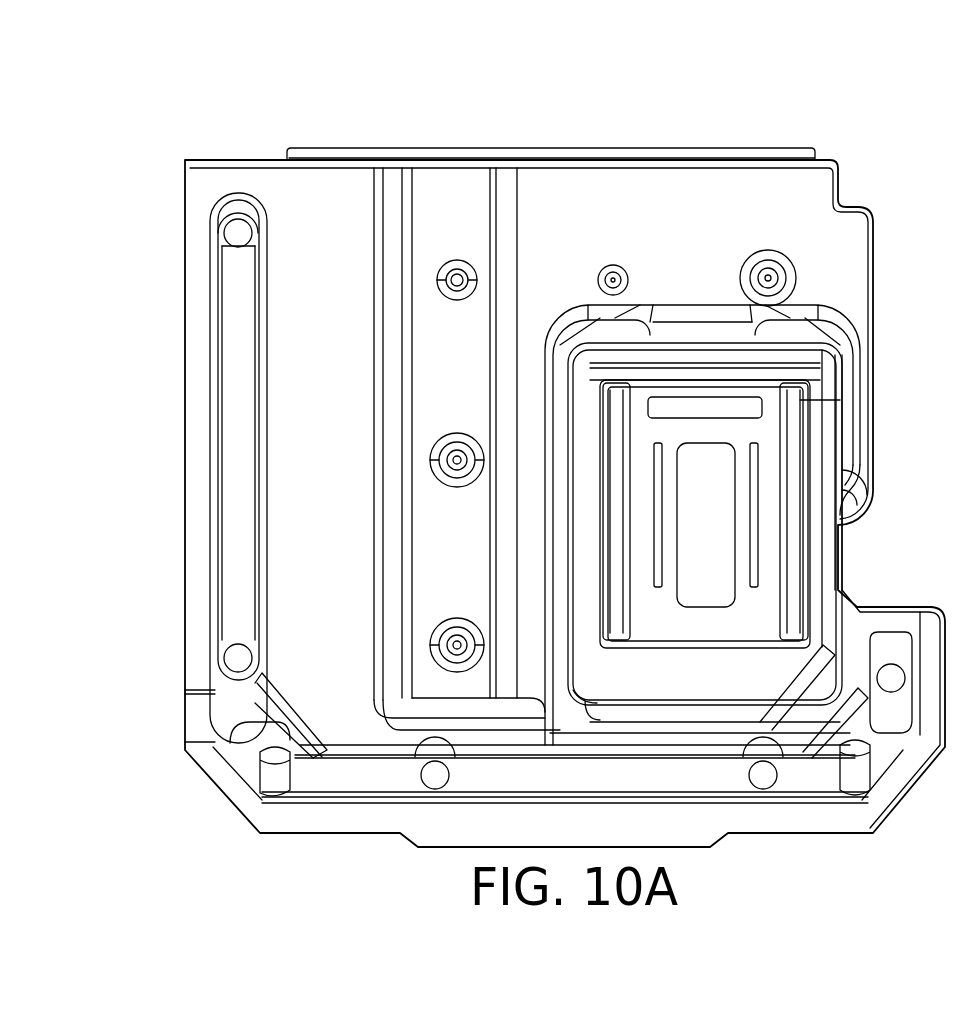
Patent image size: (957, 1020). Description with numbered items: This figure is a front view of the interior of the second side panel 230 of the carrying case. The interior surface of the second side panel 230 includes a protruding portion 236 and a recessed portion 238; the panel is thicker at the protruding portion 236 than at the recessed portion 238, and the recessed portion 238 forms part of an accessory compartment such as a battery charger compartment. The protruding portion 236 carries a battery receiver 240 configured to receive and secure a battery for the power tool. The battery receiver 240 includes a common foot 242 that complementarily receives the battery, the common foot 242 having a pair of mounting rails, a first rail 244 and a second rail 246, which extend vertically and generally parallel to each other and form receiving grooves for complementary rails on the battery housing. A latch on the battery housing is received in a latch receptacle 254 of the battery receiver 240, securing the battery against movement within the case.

The second side panel 230 is at (565, 497).
The protruding portion 236 is at (679, 292).
The recessed portion 238 is at (452, 262).
The battery receiver 240 is at (795, 400).
The common foot 242 is at (768, 480).
The first rail 244 is at (828, 508).
The second rail 246 is at (640, 611).
The latch receptacle 254 is at (740, 389).